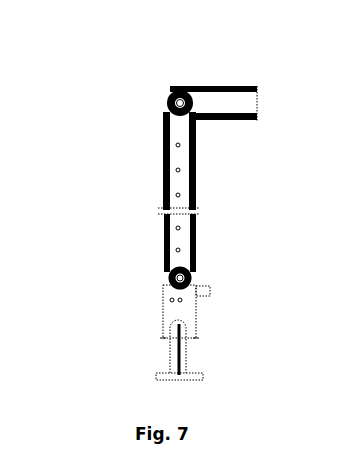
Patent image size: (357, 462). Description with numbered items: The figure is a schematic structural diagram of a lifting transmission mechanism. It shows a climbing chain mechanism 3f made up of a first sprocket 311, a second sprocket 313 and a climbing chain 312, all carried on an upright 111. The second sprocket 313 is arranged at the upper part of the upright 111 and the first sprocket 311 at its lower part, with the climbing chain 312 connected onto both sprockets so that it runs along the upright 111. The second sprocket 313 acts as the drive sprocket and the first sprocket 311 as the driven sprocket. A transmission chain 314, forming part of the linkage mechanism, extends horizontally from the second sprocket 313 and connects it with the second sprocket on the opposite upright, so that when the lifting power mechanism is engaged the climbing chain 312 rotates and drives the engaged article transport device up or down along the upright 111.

The transmission chain 314 is at (222, 88).
The second sprocket 313 is at (165, 97).
The climbing chain mechanism 3f is at (195, 175).
The climbing chain 312 is at (163, 230).
The first sprocket 311 is at (163, 272).
The upright 111 is at (165, 306).